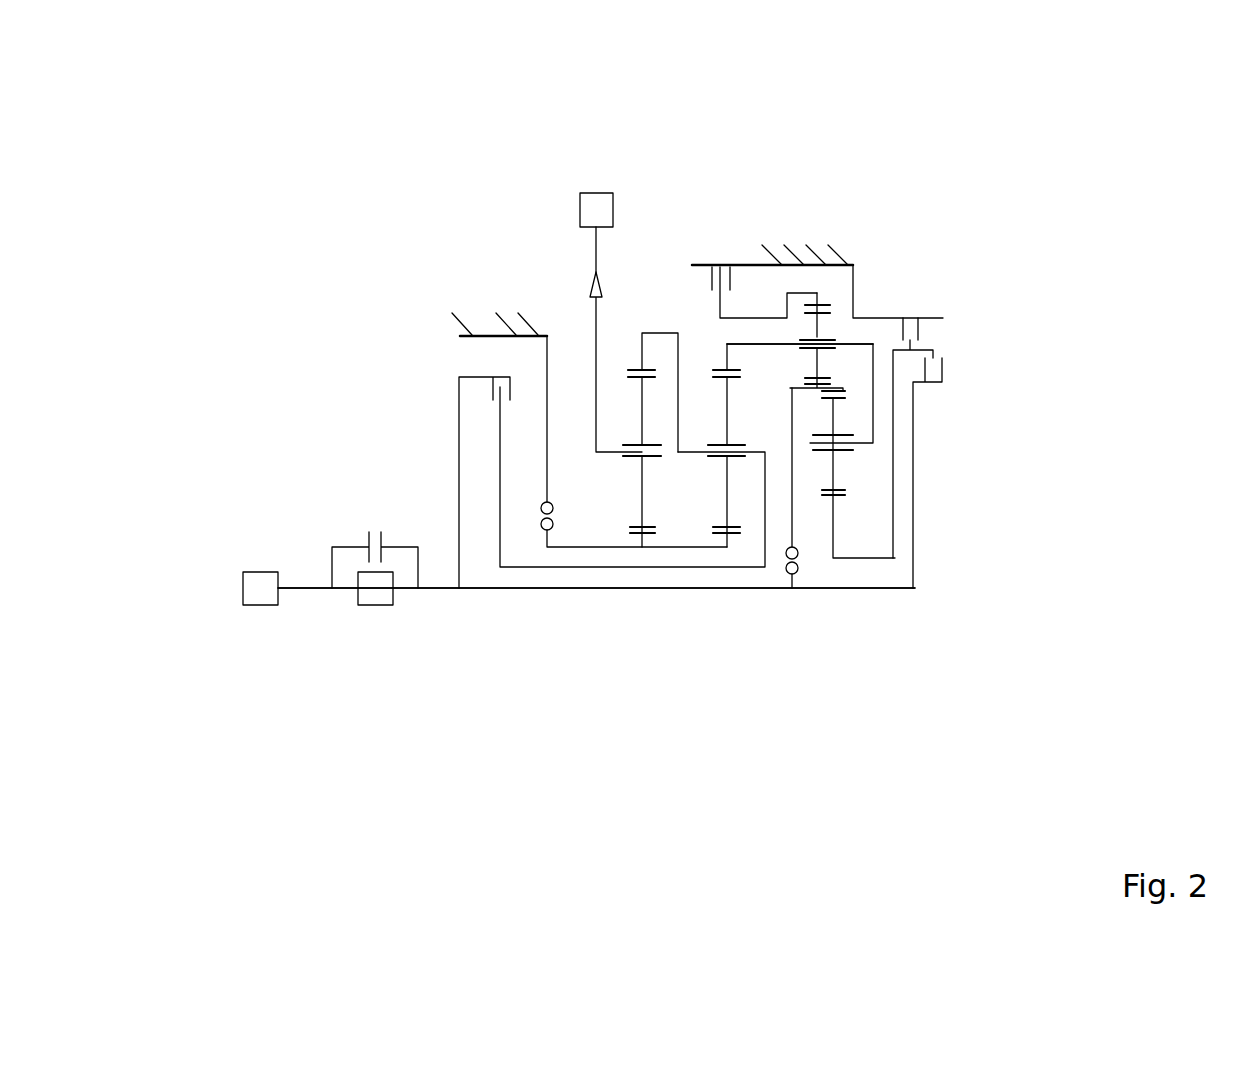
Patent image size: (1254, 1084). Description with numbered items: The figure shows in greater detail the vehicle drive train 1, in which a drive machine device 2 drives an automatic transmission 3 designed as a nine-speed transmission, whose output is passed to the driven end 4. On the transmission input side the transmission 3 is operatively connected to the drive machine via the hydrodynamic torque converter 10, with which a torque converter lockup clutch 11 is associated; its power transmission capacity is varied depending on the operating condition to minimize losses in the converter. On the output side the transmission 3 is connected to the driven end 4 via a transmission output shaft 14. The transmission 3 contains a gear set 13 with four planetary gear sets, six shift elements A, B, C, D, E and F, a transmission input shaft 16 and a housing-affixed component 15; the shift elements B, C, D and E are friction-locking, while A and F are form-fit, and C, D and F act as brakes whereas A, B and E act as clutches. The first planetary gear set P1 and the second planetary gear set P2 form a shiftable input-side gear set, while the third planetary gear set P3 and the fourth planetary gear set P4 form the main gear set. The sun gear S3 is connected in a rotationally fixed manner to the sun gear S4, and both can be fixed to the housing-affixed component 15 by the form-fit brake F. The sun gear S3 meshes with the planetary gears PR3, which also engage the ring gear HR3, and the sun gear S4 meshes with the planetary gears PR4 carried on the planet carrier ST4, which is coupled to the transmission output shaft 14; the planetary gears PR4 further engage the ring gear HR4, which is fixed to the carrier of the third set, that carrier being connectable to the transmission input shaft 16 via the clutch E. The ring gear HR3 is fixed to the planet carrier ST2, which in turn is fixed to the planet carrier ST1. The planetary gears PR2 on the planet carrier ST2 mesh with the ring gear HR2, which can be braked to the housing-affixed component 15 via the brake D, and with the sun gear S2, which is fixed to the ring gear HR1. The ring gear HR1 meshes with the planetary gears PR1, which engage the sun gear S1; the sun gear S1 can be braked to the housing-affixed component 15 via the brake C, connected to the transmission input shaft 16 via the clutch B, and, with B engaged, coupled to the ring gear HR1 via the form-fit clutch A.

The vehicle drive train 1 is at (258, 195).
The drive machine device 2 is at (262, 607).
The automatic transmission 3 is at (851, 221).
The driven end 4 is at (580, 205).
The hydrodynamic torque converter 10 is at (374, 607).
The torque converter lockup clutch 11 is at (369, 522).
The gear set 13 is at (811, 712).
The transmission output shaft 14 is at (593, 347).
The housing-affixed component 15 is at (478, 320).
The transmission input shaft 16 is at (470, 597).
The form-fit shift element A is at (801, 567).
The friction-locking shift element B is at (950, 380).
The friction-locking shift element C is at (937, 333).
The friction-locking shift element D is at (720, 252).
The friction-locking shift element E is at (490, 370).
The form-fit shift element F is at (536, 523).
The first planetary gear set P1 is at (833, 603).
The second planetary gear set P2 is at (817, 231).
The third planetary gear set P3 is at (727, 603).
The fourth planetary gear set P4 is at (642, 603).
The ring gear of the first planetary gear set HR1 is at (830, 390).
The sun gear of the second planetary gear set S2 is at (944, 277).
The ring gear of the second planetary gear set HR2 is at (808, 285).
The ring gear of the third planetary gear set HR3 is at (726, 352).
The ring gear of the fourth planetary gear set HR4 is at (658, 333).
The planetary gears of the first planetary gear set PR1 is at (836, 473).
The planetary gears of the second planetary gear set PR2 is at (820, 323).
The planetary gears of the third planetary gear set PR3 is at (727, 510).
The planetary gears of the fourth planetary gear set PR4 is at (637, 510).
The sun gear of the first planetary gear set S1 is at (836, 527).
The sun gear of the third planetary gear set S3 is at (730, 543).
The sun gear of the fourth planetary gear set S4 is at (638, 544).
The planet carrier of the first planetary gear set ST1 is at (862, 445).
The planet carrier of the second planetary gear set ST2 is at (850, 347).
The planet carrier of the fourth planetary gear set ST4 is at (600, 460).